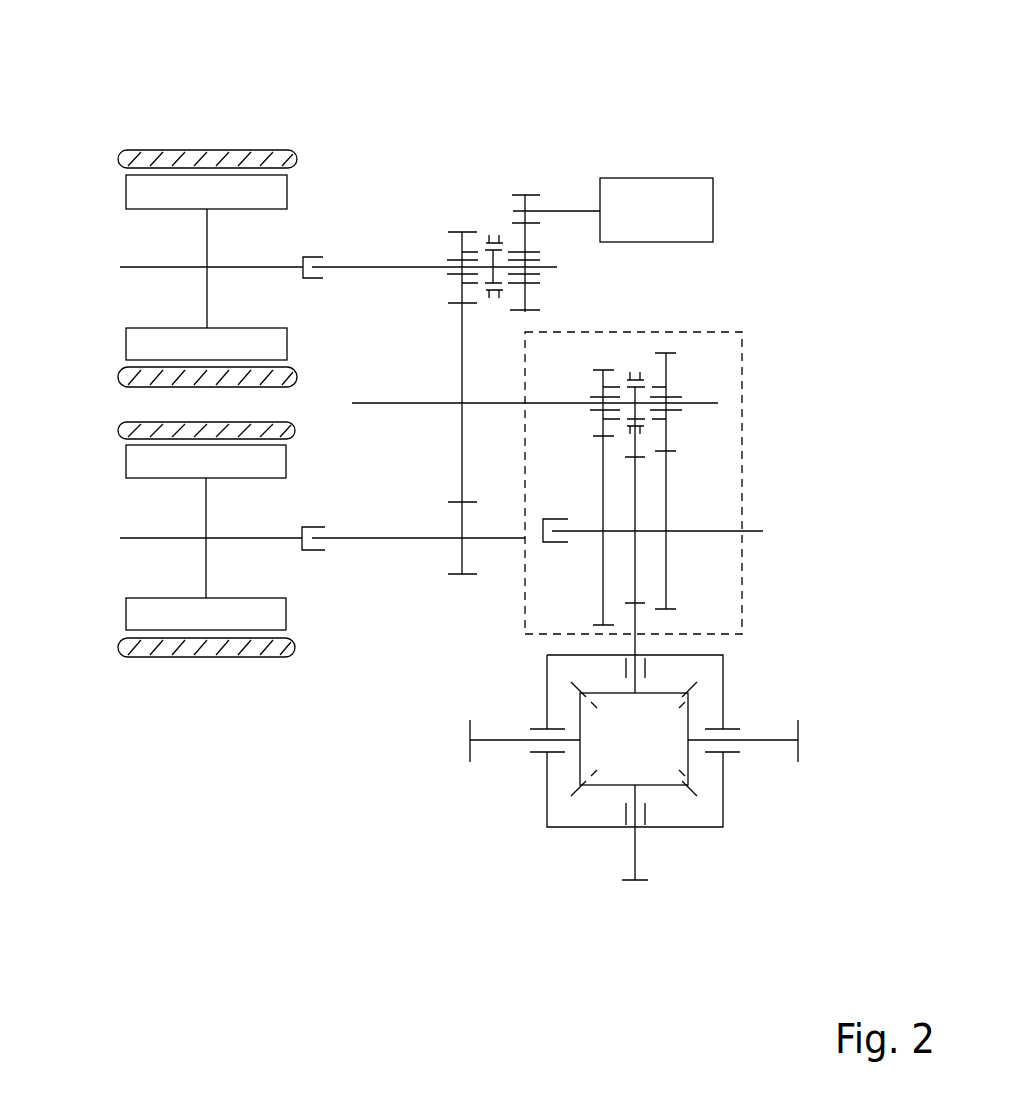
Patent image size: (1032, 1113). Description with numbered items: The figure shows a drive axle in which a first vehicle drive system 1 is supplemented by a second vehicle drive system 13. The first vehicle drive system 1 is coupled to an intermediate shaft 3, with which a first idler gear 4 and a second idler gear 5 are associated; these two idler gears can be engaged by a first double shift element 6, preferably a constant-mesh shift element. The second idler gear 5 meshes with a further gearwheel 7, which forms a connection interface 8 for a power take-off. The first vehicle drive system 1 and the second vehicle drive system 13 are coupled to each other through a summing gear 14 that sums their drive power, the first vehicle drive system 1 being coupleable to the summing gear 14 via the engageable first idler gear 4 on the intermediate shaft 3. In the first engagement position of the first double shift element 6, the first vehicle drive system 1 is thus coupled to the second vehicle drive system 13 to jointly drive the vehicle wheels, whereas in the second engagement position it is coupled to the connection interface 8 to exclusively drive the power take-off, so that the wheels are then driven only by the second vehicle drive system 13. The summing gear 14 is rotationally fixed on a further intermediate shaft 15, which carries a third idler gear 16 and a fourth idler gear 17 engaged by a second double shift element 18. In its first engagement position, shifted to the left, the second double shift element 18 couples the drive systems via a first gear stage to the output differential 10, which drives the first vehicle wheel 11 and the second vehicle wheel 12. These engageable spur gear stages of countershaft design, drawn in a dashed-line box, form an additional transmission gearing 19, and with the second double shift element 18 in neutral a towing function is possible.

The first vehicle drive system 1 is at (140, 237).
The intermediate shaft 3 is at (350, 267).
The first idler gear 4 is at (458, 231).
The second idler gear 5 is at (525, 242).
The first double shift element 6 is at (487, 233).
The further gearwheel 7 is at (518, 195).
The connection interface 8 is at (540, 205).
The output differential 10 is at (558, 833).
The first vehicle wheel 11 is at (798, 753).
The second vehicle wheel 12 is at (470, 753).
The second vehicle drive system 13 is at (161, 463).
The summing gear 14 is at (460, 453).
The further intermediate shaft 15 is at (387, 403).
The third idler gear 16 is at (603, 370).
The fourth idler gear 17 is at (670, 353).
The second double shift element 18 is at (637, 367).
The additional transmission gearing 19 is at (742, 398).